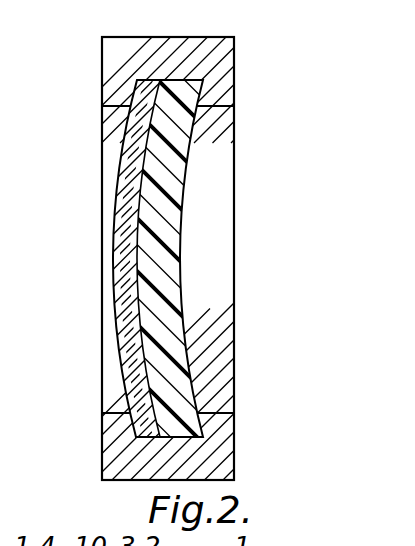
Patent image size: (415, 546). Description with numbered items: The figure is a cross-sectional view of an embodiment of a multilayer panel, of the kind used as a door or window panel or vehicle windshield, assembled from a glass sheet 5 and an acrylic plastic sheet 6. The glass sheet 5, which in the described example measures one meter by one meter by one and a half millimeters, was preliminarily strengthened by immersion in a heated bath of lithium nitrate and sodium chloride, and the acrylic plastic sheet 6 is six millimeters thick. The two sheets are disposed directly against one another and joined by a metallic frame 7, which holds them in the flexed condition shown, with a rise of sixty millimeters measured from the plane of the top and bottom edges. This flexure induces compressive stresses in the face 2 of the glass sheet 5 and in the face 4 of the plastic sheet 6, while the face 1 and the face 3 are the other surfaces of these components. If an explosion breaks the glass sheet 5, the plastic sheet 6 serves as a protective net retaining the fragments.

The face 1 is at (116, 190).
The face 2 is at (162, 80).
The face 3 is at (158, 80).
The face 4 is at (192, 135).
The glass sheet 5 is at (133, 330).
The acrylic plastic sheet 6 is at (157, 328).
The metallic frame 7 is at (113, 75).